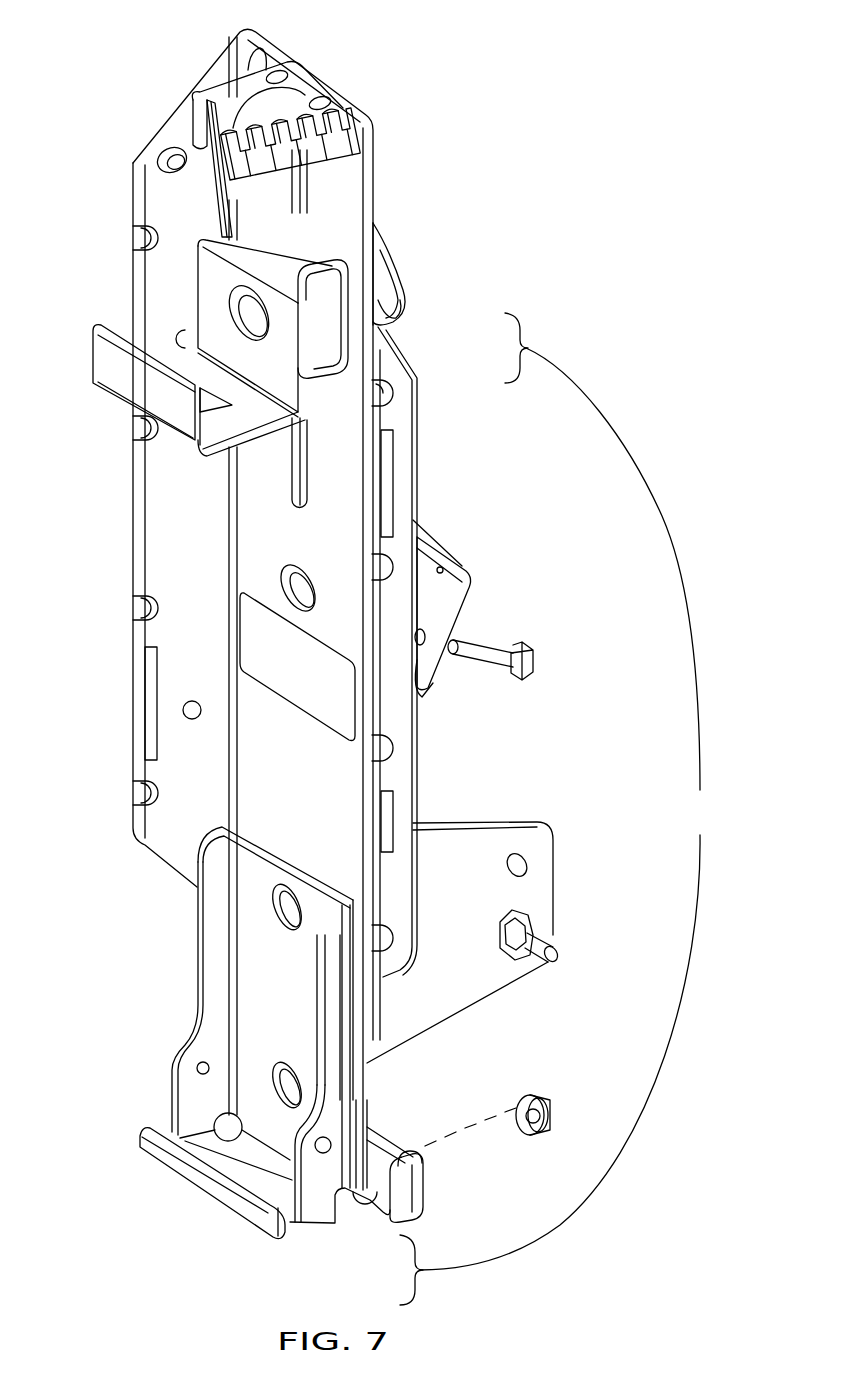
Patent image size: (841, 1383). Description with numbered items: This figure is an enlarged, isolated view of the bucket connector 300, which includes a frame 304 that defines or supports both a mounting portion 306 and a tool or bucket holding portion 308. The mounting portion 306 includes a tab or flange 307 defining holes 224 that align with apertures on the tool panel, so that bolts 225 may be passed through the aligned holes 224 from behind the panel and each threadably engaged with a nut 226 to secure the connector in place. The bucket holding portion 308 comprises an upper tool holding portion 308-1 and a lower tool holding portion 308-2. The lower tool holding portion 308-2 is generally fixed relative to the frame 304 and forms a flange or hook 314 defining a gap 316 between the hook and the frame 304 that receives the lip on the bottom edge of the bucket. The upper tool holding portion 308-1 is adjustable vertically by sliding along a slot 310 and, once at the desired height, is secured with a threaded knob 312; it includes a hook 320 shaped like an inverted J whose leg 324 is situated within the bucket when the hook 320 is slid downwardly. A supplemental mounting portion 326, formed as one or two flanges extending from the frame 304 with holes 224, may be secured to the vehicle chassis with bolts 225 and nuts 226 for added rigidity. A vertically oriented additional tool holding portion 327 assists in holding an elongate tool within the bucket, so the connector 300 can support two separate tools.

The bucket connector 300 is at (382, 152).
The frame 304 is at (376, 212).
The mounting portion 306 is at (468, 598).
The tab or flange 307 is at (453, 690).
The tool or bucket holding portion 308 is at (570, 809).
The upper tool holding portion 308-1 is at (305, 398).
The lower tool holding portion 308-2 is at (300, 1245).
The slot 310 is at (297, 467).
The threaded knob 312 is at (400, 303).
The flange or hook 314 is at (155, 1128).
The gap 316 is at (165, 1125).
The hook 320 is at (203, 313).
The leg 324 is at (200, 282).
The supplemental mounting portion 326 is at (510, 988).
The tool holding portion 327 is at (320, 80).
The holes 224 is at (435, 565).
The bolts 225 is at (510, 645).
The nut 226 is at (540, 917).